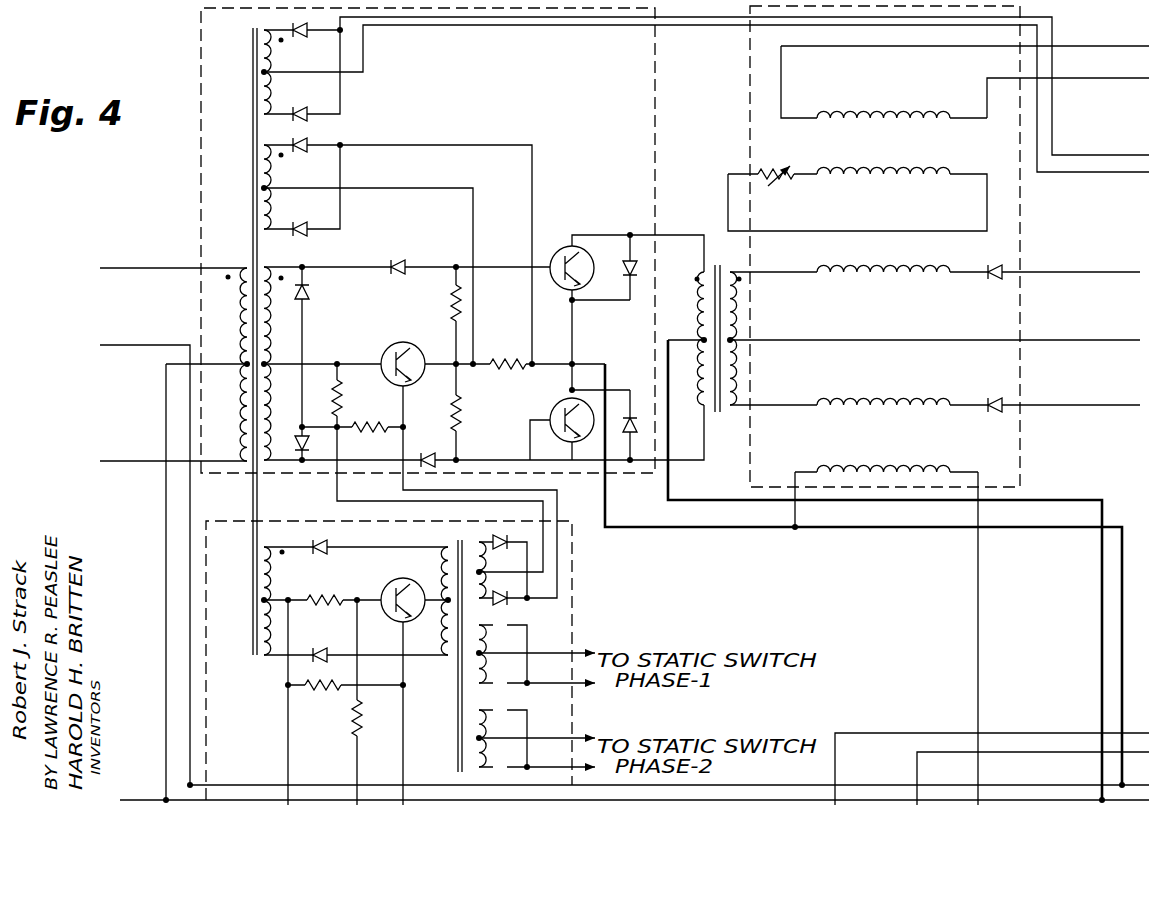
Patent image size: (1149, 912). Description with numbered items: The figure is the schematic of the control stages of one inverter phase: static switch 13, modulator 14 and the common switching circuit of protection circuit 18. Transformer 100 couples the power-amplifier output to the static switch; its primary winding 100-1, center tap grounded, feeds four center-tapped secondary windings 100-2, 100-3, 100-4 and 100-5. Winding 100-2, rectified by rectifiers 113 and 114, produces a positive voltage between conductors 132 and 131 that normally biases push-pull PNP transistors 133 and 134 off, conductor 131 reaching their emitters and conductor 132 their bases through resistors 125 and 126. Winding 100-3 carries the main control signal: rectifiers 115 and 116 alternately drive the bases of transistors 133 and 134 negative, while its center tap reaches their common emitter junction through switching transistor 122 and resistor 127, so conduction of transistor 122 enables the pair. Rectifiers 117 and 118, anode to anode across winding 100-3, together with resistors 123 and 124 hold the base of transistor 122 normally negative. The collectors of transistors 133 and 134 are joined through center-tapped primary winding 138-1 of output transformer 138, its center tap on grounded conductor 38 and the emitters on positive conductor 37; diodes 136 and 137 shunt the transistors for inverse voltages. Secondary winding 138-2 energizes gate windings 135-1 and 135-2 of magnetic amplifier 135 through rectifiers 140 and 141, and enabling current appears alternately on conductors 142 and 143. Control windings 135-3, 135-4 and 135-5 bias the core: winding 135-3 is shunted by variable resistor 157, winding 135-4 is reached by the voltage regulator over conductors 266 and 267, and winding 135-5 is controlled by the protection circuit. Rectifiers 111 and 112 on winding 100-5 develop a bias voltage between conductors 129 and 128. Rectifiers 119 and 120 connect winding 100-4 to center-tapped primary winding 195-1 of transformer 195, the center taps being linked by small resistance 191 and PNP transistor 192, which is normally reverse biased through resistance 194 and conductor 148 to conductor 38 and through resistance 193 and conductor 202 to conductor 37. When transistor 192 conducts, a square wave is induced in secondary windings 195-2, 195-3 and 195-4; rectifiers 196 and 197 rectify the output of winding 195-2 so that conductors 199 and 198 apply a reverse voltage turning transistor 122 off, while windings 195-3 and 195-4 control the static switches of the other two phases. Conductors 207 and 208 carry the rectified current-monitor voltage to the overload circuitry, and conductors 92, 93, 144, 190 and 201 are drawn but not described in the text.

The static switch 13 is at (201, 18).
The modulator 14 is at (750, 62).
The protection circuit 18 is at (230, 519).
The positive voltage conductor 37 is at (118, 345).
The grounded conductor 38 is at (156, 800).
The input line 92 is at (118, 268).
The input line 93 is at (118, 461).
The transformer 100 is at (253, 47).
The primary winding 100-1 is at (235, 286).
The secondary winding 100-2 is at (295, 187).
The secondary winding 100-3 is at (280, 326).
The secondary winding 100-4 is at (298, 601).
The secondary winding 100-5 is at (295, 72).
The rectifier 111 is at (296, 27).
The rectifier 112 is at (292, 108).
The rectifier 113 is at (308, 141).
The rectifier 114 is at (306, 236).
The rectifier 115 is at (402, 260).
The rectifier 116 is at (420, 455).
The rectifier 117 is at (308, 288).
The rectifier 118 is at (304, 458).
The rectifier 119 is at (330, 546).
The rectifier 120 is at (312, 648).
The switching transistor 122 is at (400, 342).
The resistor 123 is at (355, 395).
The resistor 124 is at (354, 422).
The resistor 125 is at (450, 302).
The resistor 126 is at (472, 412).
The resistor 127 is at (492, 356).
The conductor 128 is at (402, 20).
The conductor 129 is at (527, 28).
The conductor 131 is at (444, 145).
The conductor 132 is at (438, 188).
The transistor 133 is at (556, 252).
The transistor 134 is at (556, 410).
The magnetic amplifier 135 is at (900, 81).
The gate winding 135-1 is at (822, 266).
The gate winding 135-2 is at (838, 398).
The control winding 135-3 is at (846, 164).
The control winding 135-4 is at (846, 110).
The control winding 135-5 is at (838, 464).
The diode 136 is at (622, 264).
The diode 137 is at (632, 410).
The output transformer 138 is at (735, 263).
The primary winding 138-1 is at (696, 300).
The secondary winding 138-2 is at (740, 303).
The rectifier 140 is at (996, 266).
The rectifier 141 is at (990, 396).
The conductor 142 is at (1090, 260).
The conductor 143 is at (1100, 416).
The output conductor 144 is at (1088, 332).
The conductor 148 is at (357, 776).
The variable resistor 157 is at (788, 178).
The conductor 190 is at (978, 717).
The resistance 191 is at (316, 596).
The transistor 192 is at (386, 592).
The resistance 193 is at (330, 698).
The resistance 194 is at (350, 726).
The transformer 195 is at (478, 543).
The primary winding 195-1 is at (440, 640).
The secondary winding 195-2 is at (501, 570).
The secondary winding 195-3 is at (486, 640).
The secondary winding 195-4 is at (486, 726).
The rectifier 196 is at (508, 540).
The rectifier 197 is at (510, 604).
The conductor 198 is at (340, 450).
The conductor 199 is at (404, 492).
The conductor 201 is at (403, 772).
The conductor 202 is at (288, 776).
The conductor 207 is at (835, 776).
The conductor 208 is at (917, 772).
The conductor 266 is at (1072, 46).
The conductor 267 is at (1100, 78).